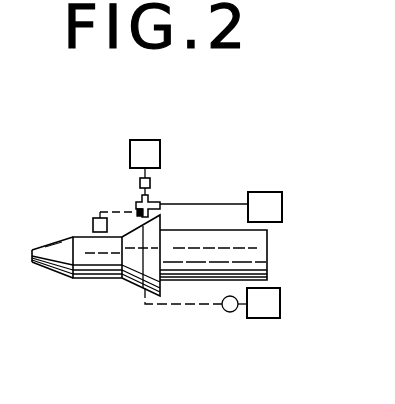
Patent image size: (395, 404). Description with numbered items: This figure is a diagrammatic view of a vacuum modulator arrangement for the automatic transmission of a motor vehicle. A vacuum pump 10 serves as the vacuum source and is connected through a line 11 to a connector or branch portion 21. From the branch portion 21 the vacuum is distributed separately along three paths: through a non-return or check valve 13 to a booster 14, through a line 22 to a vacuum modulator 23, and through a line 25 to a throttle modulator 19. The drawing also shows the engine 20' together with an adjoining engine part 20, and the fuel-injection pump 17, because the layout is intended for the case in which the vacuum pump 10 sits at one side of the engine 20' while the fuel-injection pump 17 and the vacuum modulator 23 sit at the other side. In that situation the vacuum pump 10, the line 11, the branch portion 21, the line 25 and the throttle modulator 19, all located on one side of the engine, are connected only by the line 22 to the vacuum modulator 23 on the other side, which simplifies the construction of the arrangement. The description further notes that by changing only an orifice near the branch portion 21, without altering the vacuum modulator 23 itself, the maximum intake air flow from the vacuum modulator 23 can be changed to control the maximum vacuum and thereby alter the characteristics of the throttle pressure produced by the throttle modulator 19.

The vacuum pump 10 is at (262, 208).
The line 11 is at (207, 204).
The non-return or check valve 13 is at (152, 182).
The booster 14 is at (146, 140).
The fuel-injection pump 17 is at (270, 303).
The throttle modulator 19 is at (92, 222).
The nozzle 20 is at (77, 287).
The engine 20' is at (249, 255).
The branch portion 21 is at (139, 204).
The line 22 is at (200, 304).
The vacuum modulator 23 is at (230, 313).
The line 25 is at (100, 207).